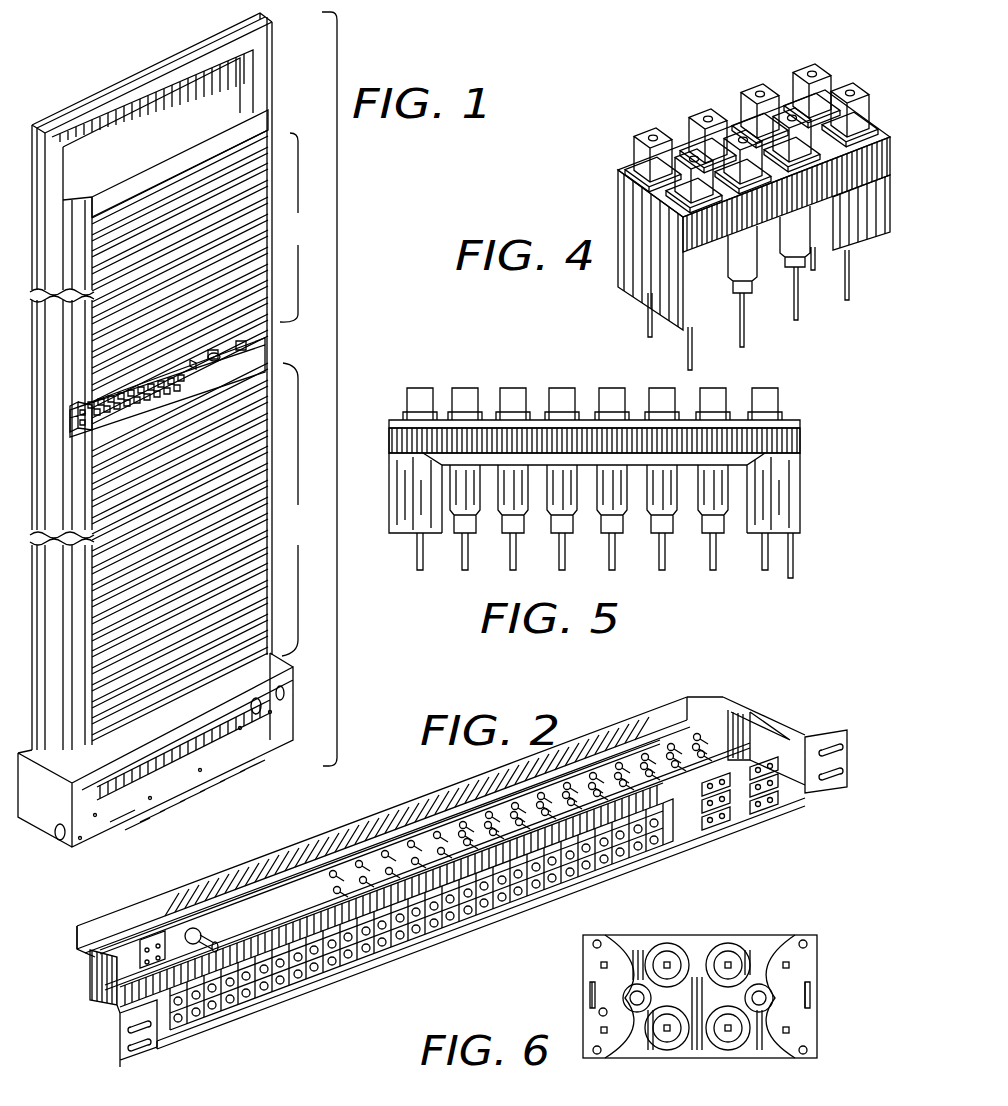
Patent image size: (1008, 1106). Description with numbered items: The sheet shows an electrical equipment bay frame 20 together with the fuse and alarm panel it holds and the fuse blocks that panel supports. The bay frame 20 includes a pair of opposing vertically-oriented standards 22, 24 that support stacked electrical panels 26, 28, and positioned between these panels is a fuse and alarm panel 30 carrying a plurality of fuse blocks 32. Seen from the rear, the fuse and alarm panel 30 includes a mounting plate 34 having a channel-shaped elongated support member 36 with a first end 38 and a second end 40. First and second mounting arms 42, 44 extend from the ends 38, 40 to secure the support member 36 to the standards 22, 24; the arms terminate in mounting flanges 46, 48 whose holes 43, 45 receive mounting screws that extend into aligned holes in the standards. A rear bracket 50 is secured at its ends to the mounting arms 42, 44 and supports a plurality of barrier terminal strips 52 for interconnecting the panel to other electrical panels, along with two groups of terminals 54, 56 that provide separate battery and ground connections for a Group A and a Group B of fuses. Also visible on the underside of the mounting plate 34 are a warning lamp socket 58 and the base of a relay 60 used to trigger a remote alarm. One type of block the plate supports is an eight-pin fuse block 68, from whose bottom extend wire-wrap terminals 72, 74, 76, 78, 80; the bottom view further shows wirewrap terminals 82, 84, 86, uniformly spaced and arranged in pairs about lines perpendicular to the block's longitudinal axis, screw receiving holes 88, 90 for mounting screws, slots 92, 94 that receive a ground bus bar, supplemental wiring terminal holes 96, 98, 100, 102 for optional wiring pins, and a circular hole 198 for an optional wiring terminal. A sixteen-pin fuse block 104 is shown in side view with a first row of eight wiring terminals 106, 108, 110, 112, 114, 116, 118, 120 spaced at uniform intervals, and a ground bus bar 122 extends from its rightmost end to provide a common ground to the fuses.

In FIG. 1, the electrical equipment bay frame 20 is at (281, 80).
In FIG. 1, the vertically-oriented standard 22 is at (57, 494).
In FIG. 1, the vertically-oriented standard 24 is at (273, 110).
In FIG. 1, the electrical panel 26 is at (204, 552).
In FIG. 1, the electrical panel 28 is at (189, 267).
In FIG. 1, the fuse and alarm panel 30 is at (266, 341).
In FIG. 2, the fuse and alarm panel 30 is at (771, 710).
In FIG. 1, the fuse blocks 32 is at (68, 412).
In FIG. 2, the mounting plate 34 is at (317, 830).
In FIG. 2, the channel-shaped elongated support member 36 is at (268, 887).
In FIG. 2, the first end 38 is at (80, 960).
In FIG. 2, the second end 40 is at (726, 699).
In FIG. 2, the first mounting arm 42 is at (104, 1002).
In FIG. 2, the holes 43 is at (120, 1035).
In FIG. 2, the second mounting arm 44 is at (766, 719).
In FIG. 2, the holes 45 is at (849, 772).
In FIG. 2, the mounting flange 46 is at (143, 1050).
In FIG. 2, the mounting flange 48 is at (850, 738).
In FIG. 2, the rear bracket 50 is at (686, 827).
In FIG. 2, the barrier terminal strips 52 is at (447, 937).
In FIG. 2, the terminals 54 is at (785, 806).
In FIG. 2, the terminals 56 is at (732, 825).
In FIG. 2, the warning lamp socket 58 is at (210, 930).
In FIG. 2, the relay 60 is at (152, 940).
In FIG. 4, the 8-pin fuse block 68 is at (603, 192).
In FIG. 6, the 8-pin fuse block 68 is at (828, 977).
In FIG. 4, the wirewrap terminal 72 is at (647, 318).
In FIG. 6, the wirewrap terminal 72 is at (601, 1030).
In FIG. 4, the wirewrap terminal 74 is at (692, 352).
In FIG. 6, the wirewrap terminal 74 is at (601, 965).
In FIG. 4, the wirewrap terminal 76 is at (745, 323).
In FIG. 6, the wirewrap terminal 76 is at (668, 958).
In FIG. 4, the wirewrap terminal 78 is at (798, 307).
In FIG. 6, the wirewrap terminal 78 is at (729, 958).
In FIG. 4, the wirewrap terminal 80 is at (850, 287).
In FIG. 6, the wirewrap terminal 80 is at (786, 962).
In FIG. 6, the wirewrap terminal 82 is at (668, 1035).
In FIG. 6, the wirewrap terminal 84 is at (729, 1035).
In FIG. 6, the wirewrap terminal 86 is at (790, 1030).
In FIG. 6, the screw receiving hole 88 is at (637, 1012).
In FIG. 6, the screw receiving hole 90 is at (768, 1012).
In FIG. 6, the slot 92 is at (592, 995).
In FIG. 6, the slot 94 is at (812, 998).
In FIG. 6, the supplemental wiring terminal hole 96 is at (807, 942).
In FIG. 6, the supplemental wiring terminal hole 98 is at (599, 940).
In FIG. 6, the supplemental wiring terminal hole 100 is at (594, 1050).
In FIG. 6, the supplemental wiring terminal hole 102 is at (808, 1049).
In FIG. 5, the 16-pin fuse block 104 is at (813, 443).
In FIG. 5, the wiring terminal 106 is at (417, 572).
In FIG. 5, the wiring terminal 108 is at (462, 572).
In FIG. 5, the wiring terminal 110 is at (510, 572).
In FIG. 5, the wiring terminal 112 is at (559, 572).
In FIG. 5, the wiring terminal 114 is at (609, 572).
In FIG. 5, the wiring terminal 116 is at (659, 572).
In FIG. 5, the wiring terminal 118 is at (710, 572).
In FIG. 5, the wiring terminal 120 is at (762, 572).
In FIG. 5, the ground bus bar 122 is at (794, 566).
In FIG. 6, the circular hole 198 is at (600, 1012).